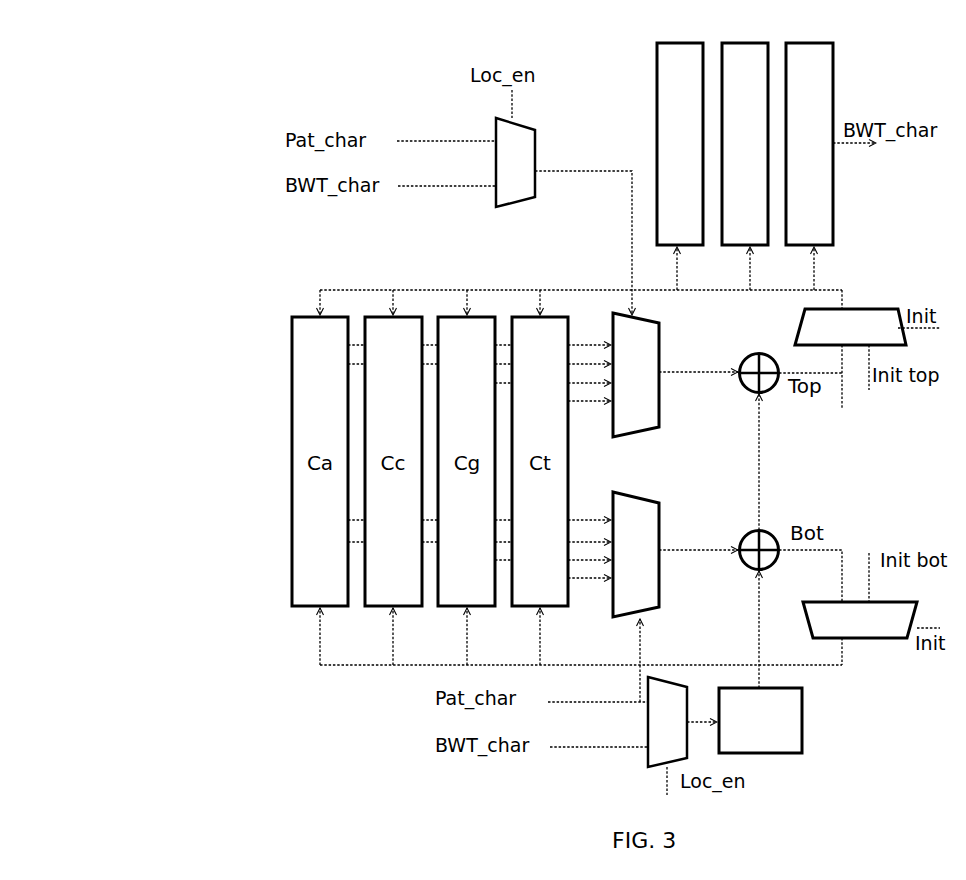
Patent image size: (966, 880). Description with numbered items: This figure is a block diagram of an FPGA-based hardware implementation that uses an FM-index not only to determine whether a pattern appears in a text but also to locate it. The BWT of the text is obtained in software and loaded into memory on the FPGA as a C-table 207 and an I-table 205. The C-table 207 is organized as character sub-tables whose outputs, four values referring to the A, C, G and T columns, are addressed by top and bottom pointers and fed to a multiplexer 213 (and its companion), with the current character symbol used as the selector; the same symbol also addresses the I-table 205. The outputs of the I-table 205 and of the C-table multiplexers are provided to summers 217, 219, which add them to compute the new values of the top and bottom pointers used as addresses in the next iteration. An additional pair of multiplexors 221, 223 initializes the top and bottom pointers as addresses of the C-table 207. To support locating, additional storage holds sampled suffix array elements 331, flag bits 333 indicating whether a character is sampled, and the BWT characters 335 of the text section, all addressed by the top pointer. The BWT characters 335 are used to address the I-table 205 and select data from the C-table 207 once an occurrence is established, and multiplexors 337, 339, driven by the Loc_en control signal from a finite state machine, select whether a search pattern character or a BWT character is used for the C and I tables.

The I-table 205 is at (802, 735).
The C-table 207 is at (212, 684).
The multiplexer 213 is at (656, 532).
The summer 217 is at (770, 394).
The summer 219 is at (770, 531).
The multiplexor 221 is at (656, 357).
The multiplexor 223 is at (858, 641).
The sampled suffix array elements 331 is at (700, 42).
The flag bits 333 is at (727, 42).
The BWT characters 335 is at (834, 65).
The multiplexor 337 is at (536, 146).
The multiplexor 339 is at (641, 757).